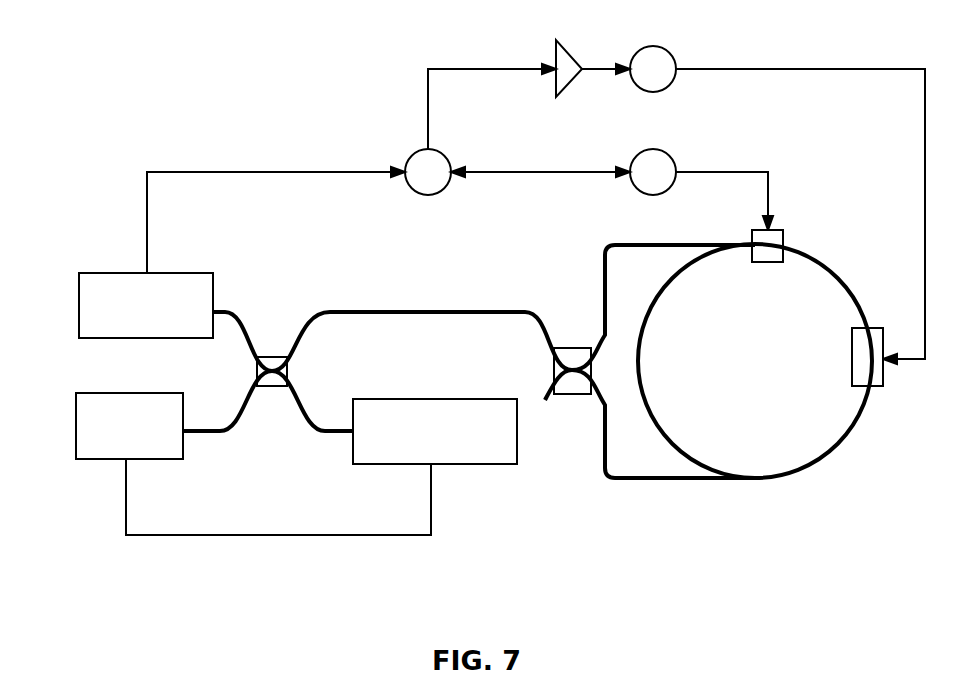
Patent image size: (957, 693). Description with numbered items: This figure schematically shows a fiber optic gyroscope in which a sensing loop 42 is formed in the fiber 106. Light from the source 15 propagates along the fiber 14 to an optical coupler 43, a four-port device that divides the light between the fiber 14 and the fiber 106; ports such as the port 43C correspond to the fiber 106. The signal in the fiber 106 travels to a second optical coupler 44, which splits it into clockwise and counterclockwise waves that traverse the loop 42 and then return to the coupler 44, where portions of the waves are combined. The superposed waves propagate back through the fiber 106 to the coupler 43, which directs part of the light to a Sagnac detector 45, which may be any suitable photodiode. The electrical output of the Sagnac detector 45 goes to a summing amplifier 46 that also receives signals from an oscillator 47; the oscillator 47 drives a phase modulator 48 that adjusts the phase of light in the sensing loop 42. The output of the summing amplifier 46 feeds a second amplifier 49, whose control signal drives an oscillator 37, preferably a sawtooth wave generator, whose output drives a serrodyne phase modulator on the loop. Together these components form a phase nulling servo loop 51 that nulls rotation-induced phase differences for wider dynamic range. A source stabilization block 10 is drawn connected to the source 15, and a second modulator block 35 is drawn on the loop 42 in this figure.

The phase nulling servo loop 51 is at (375, 96).
The second amplifier 49 is at (553, 55).
The oscillator 37 is at (655, 46).
The summing amplifier 46 is at (430, 195).
The oscillator 47 is at (630, 178).
The phase modulator 48 is at (785, 240).
The phase modulator 35 is at (885, 372).
The sensing loop 42 is at (778, 478).
The fiber 106 is at (343, 312).
The fiber 14 is at (220, 435).
The optical coupler 43 is at (269, 410).
The port 43C is at (233, 370).
The optical coupler 44 is at (566, 415).
The Sagnac detector 45 is at (138, 272).
The source 15 is at (103, 460).
The source stabilization circuit 10 is at (493, 465).